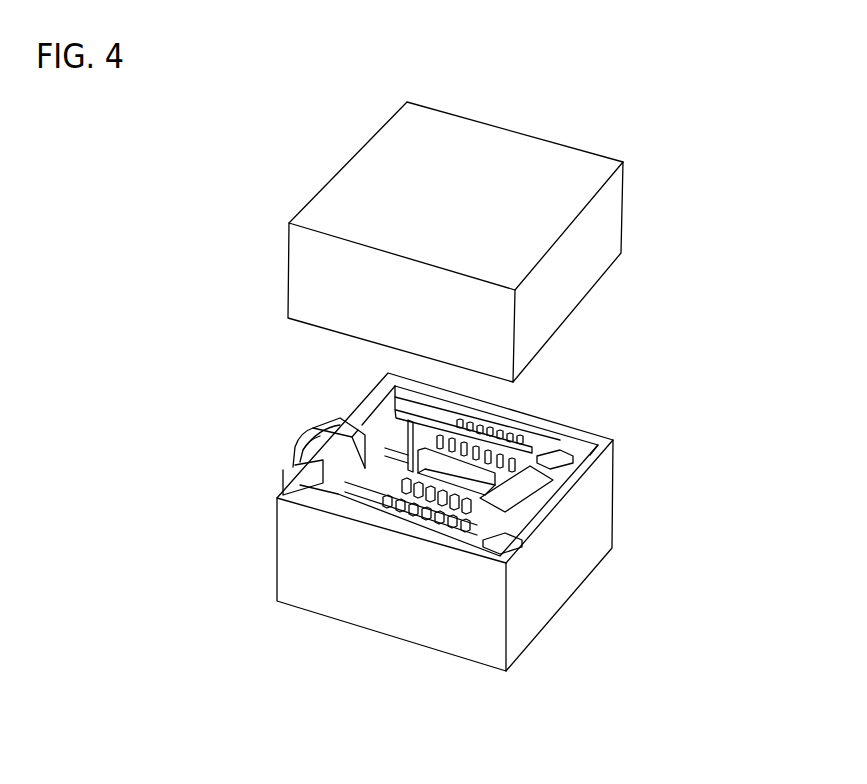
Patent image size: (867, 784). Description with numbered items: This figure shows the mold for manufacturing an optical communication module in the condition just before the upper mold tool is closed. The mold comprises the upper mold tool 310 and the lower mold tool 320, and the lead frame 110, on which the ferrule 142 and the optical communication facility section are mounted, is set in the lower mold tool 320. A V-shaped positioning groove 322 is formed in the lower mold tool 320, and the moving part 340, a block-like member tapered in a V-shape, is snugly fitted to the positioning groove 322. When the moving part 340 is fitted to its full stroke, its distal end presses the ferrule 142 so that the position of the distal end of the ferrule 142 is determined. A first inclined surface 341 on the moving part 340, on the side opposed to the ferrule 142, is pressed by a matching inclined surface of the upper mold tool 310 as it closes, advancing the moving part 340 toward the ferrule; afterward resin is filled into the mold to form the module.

The upper mold tool 310 is at (608, 230).
The lower mold tool 320 is at (602, 510).
The positioning groove 322 is at (283, 495).
The moving part 340 is at (347, 418).
The first inclined surface 341 is at (335, 426).
The lead frame 110 is at (540, 494).
The ferrule 142 is at (404, 455).